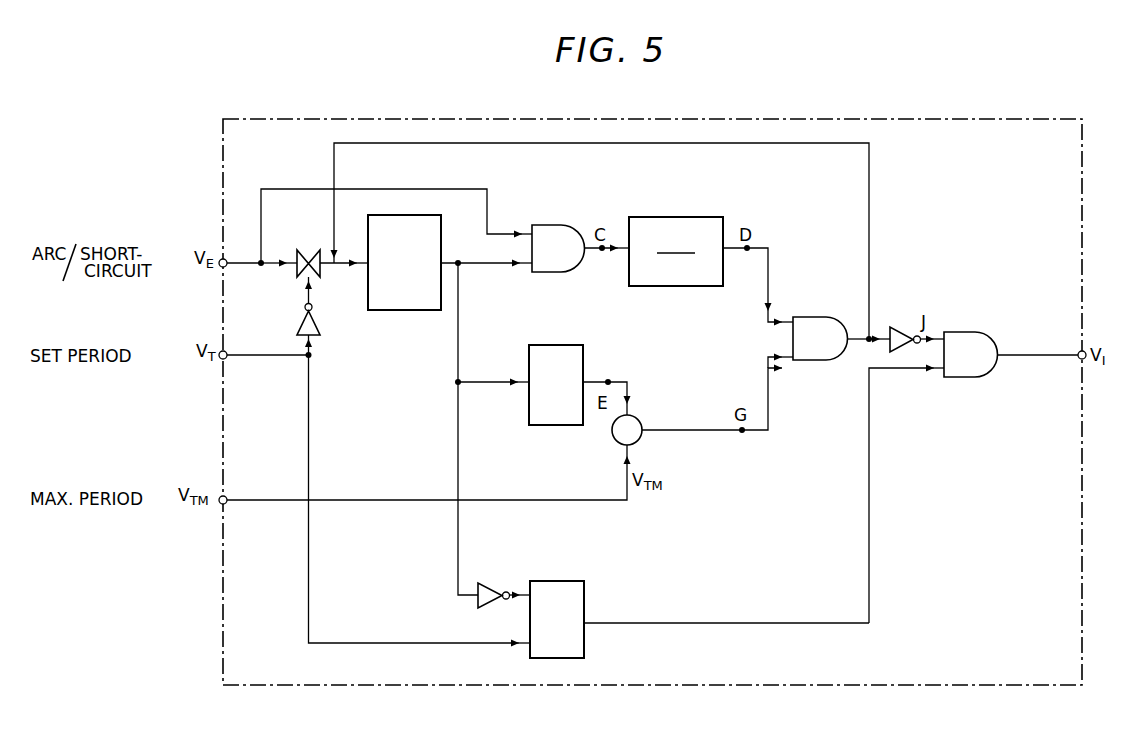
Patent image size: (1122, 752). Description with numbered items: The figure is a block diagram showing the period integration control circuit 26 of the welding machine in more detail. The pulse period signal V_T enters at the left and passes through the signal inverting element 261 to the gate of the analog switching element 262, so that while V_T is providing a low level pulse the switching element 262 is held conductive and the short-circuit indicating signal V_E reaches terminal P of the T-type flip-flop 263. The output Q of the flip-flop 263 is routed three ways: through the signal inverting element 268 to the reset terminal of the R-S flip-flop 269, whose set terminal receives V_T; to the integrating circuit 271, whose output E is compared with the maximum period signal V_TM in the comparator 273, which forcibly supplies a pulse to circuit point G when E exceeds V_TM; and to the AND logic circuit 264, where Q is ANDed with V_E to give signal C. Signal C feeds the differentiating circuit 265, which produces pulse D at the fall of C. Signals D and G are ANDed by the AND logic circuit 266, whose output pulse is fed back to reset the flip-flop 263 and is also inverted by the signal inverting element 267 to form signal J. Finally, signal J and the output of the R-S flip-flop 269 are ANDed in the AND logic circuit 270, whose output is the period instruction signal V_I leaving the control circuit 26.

The period integration control circuit 26 is at (795, 687).
The signal inverting element 261 is at (318, 318).
The analog switching element 262 is at (321, 271).
The T-type flip-flop 263 is at (407, 311).
The AND logic circuit 264 is at (574, 272).
The differentiating circuit 265 is at (665, 287).
The AND logic circuit 266 is at (816, 361).
The signal inverting element 267 is at (903, 327).
The signal inverting element 268 is at (492, 583).
The R-S flip-flop 269 is at (585, 610).
The AND logic circuit 270 is at (963, 378).
The integrating circuit 271 is at (583, 367).
The comparator 273 is at (640, 437).